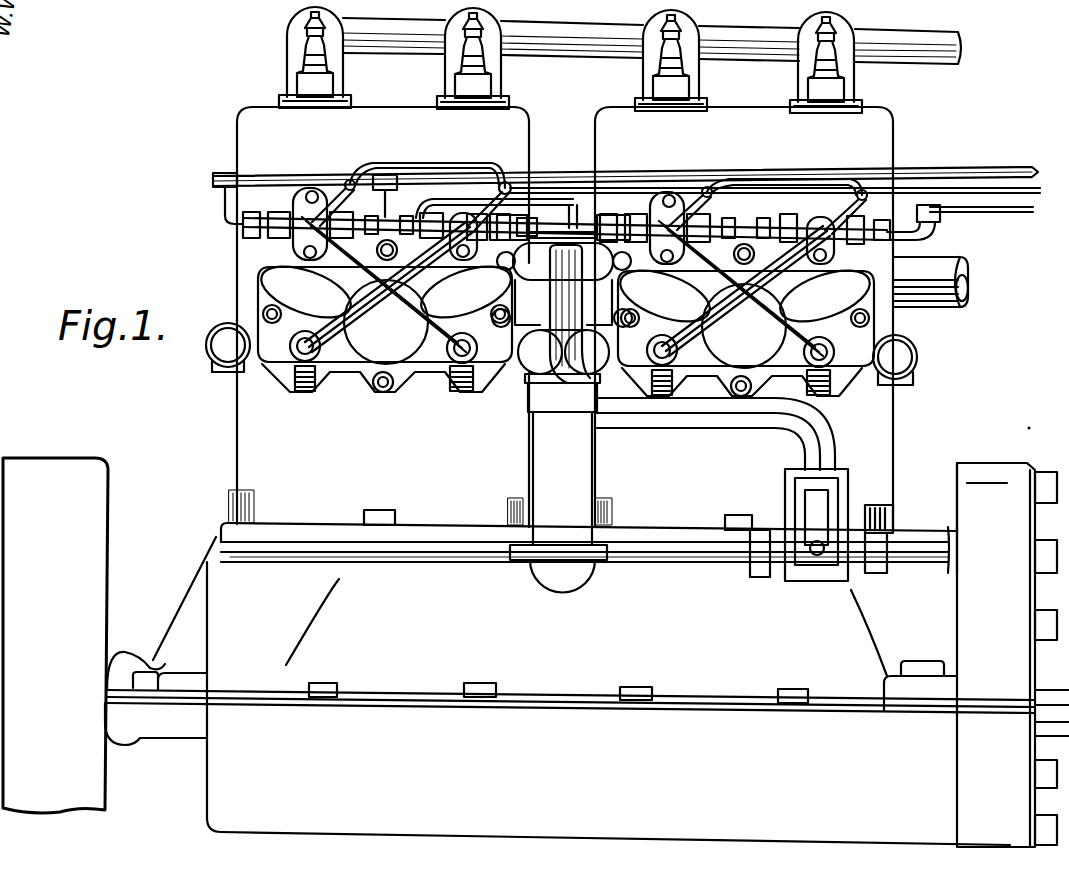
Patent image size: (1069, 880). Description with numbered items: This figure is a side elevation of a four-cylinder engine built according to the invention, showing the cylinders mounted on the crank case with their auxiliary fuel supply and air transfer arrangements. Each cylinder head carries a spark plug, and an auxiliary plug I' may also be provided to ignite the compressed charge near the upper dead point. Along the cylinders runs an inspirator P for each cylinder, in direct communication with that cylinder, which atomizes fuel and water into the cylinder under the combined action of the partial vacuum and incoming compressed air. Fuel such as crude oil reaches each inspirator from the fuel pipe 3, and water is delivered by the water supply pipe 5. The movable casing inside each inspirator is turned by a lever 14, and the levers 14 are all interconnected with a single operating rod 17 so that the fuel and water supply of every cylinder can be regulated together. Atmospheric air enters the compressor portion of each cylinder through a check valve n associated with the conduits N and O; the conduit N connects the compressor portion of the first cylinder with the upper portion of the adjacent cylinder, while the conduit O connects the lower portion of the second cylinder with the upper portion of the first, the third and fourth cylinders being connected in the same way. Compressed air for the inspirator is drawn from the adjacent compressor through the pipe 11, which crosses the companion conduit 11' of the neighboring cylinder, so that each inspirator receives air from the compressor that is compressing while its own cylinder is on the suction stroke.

The auxiliary plug I' is at (561, 60).
The inspirator P is at (300, 222).
The lever 14 is at (338, 190).
The operating rod 17 is at (567, 170).
The fuel pipe 3 is at (1020, 172).
The water supply pipe 5 is at (1015, 214).
The conduit N is at (303, 283).
The conduit O is at (338, 347).
The check valve n is at (305, 392).
The pipe 11 is at (567, 292).
The conduit 11' is at (562, 292).